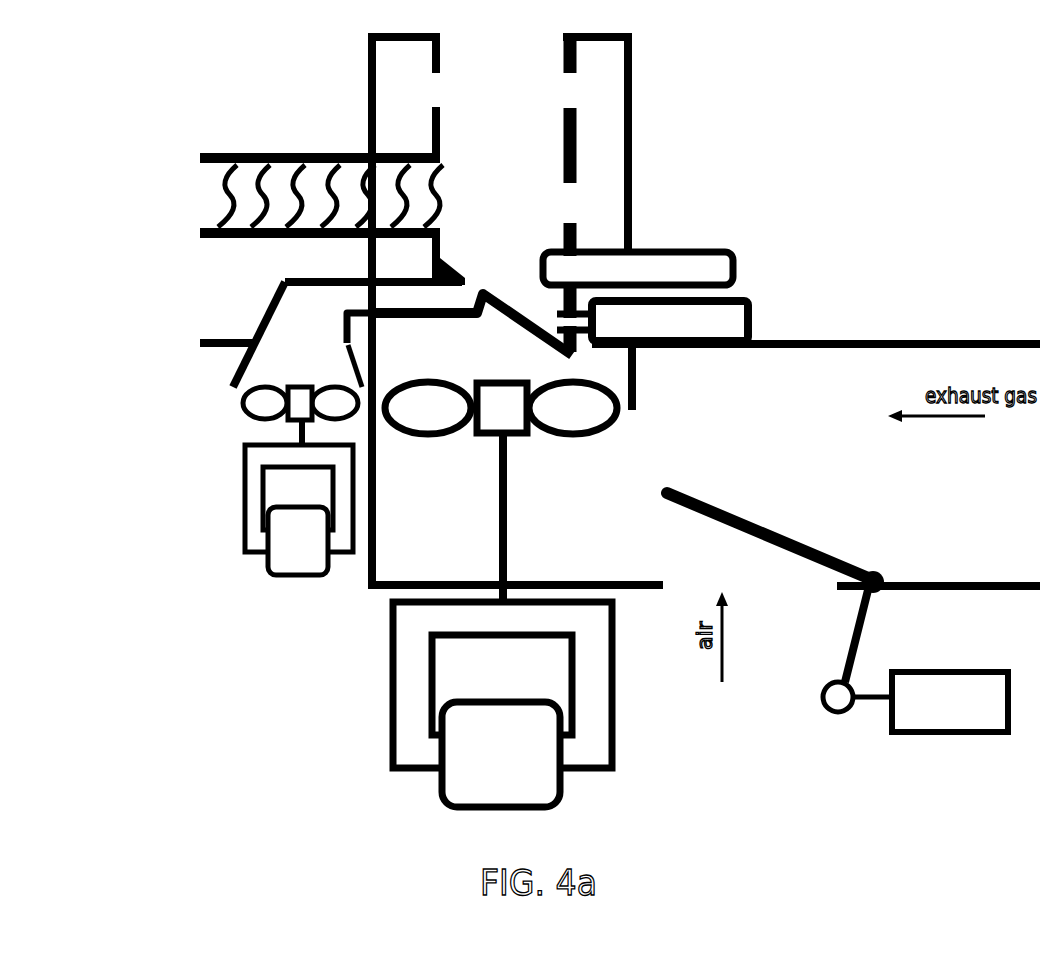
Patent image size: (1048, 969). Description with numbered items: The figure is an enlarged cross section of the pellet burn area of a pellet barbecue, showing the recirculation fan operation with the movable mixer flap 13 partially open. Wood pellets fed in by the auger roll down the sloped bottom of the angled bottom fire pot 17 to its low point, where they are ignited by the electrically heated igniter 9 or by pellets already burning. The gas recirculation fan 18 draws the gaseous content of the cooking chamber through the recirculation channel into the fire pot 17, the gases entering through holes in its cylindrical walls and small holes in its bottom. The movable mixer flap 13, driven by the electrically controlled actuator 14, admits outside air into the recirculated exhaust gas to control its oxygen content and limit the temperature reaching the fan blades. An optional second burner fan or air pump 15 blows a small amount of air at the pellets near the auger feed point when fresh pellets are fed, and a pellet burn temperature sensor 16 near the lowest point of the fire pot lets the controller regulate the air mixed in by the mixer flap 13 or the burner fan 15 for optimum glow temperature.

The electrically heated igniter 9 is at (752, 322).
The movable mixer flap 13 is at (773, 535).
The electrically controlled actuator 14 is at (955, 735).
The second burner fan or air pump 15 is at (199, 498).
The pellet burn temperature sensor 16 is at (690, 255).
The angled bottom fire pot 17 is at (522, 163).
The gas recirculation fan 18 is at (560, 480).